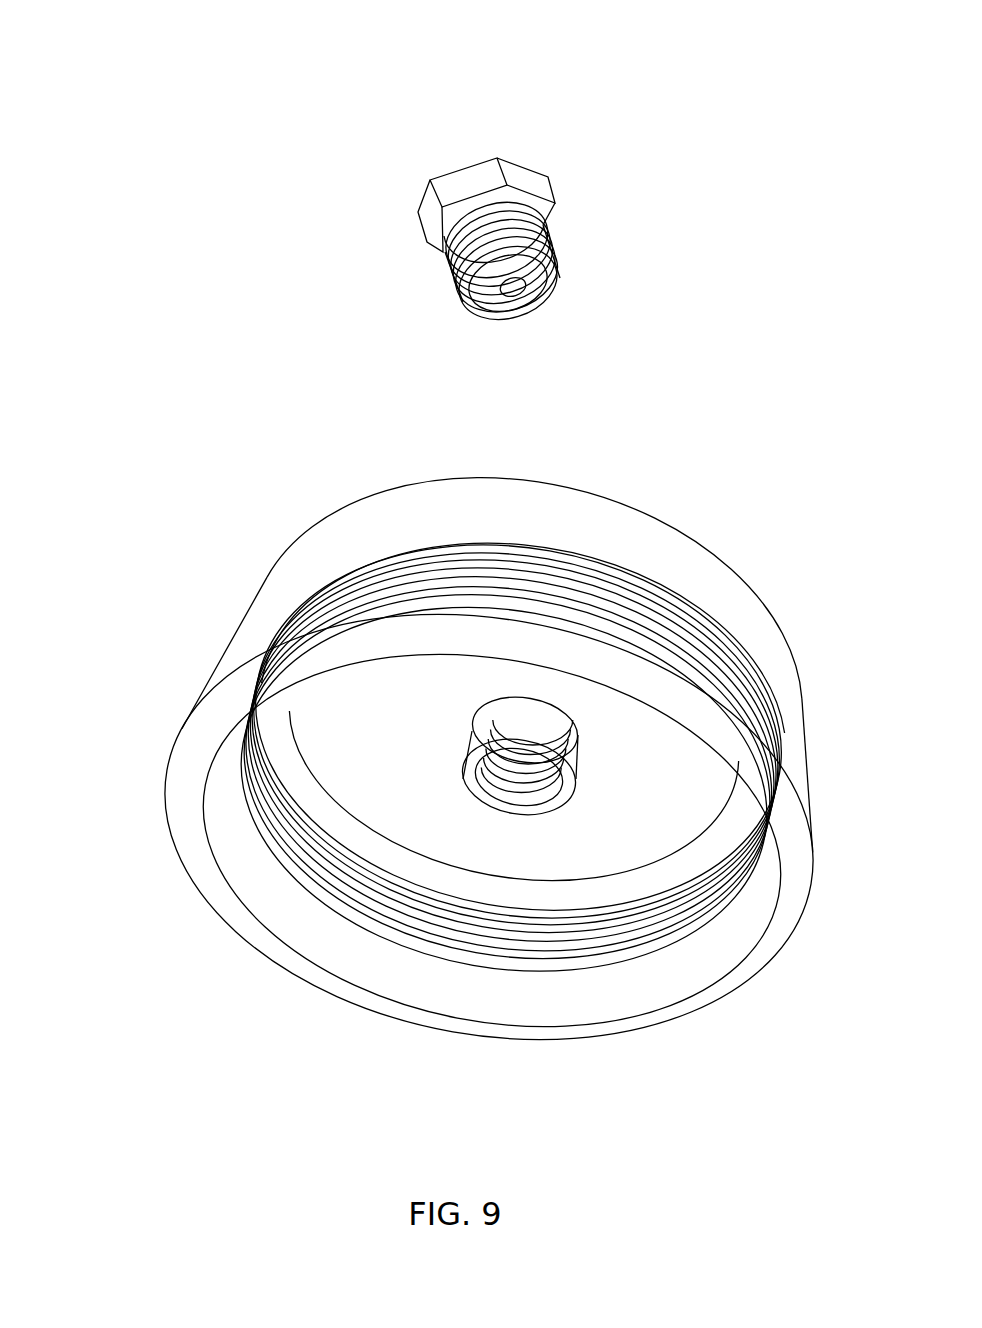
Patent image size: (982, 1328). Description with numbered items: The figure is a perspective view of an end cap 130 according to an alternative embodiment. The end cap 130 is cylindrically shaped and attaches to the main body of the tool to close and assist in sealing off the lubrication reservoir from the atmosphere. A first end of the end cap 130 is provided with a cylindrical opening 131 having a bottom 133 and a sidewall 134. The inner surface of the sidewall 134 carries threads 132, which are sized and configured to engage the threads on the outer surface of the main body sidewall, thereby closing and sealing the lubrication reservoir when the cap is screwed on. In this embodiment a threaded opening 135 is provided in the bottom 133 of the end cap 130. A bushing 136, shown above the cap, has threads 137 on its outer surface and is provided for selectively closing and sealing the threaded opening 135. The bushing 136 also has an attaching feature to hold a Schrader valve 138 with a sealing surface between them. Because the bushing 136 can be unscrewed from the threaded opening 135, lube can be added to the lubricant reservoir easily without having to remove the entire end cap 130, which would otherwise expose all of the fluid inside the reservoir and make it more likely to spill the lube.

The end cap 130 is at (450, 793).
The cylindrical opening 131 is at (300, 945).
The threads 132 is at (582, 930).
The bottom 133 is at (427, 797).
The sidewall 134 is at (196, 853).
The threaded opening 135 is at (519, 812).
The bushing 136 is at (451, 237).
The threads 137 is at (448, 266).
The Schrader valve 138 is at (500, 312).